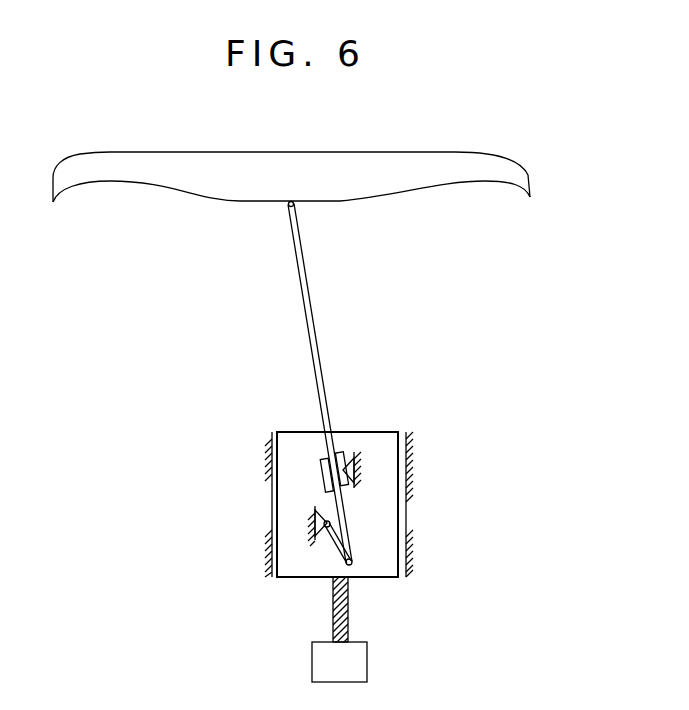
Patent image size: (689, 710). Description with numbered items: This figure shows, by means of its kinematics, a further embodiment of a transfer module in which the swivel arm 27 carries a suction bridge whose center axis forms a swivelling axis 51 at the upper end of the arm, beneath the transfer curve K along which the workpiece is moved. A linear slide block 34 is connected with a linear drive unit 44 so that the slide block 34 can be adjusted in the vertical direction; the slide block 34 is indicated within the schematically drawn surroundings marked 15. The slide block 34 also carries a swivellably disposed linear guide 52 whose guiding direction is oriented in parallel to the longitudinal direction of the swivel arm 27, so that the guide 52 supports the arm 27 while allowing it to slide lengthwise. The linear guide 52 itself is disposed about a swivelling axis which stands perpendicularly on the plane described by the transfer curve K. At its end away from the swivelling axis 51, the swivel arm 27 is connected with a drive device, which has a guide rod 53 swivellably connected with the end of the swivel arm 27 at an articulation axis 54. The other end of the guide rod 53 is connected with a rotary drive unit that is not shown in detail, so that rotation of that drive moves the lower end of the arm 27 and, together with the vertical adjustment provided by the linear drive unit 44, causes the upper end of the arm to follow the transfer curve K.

The transfer curve K is at (528, 172).
The swivel arm 27 is at (313, 307).
The swivelling axis 51 is at (288, 212).
The detection device 15 is at (230, 460).
The linear slide block 34 is at (386, 498).
The linear guide 52 is at (353, 442).
The guide rod 53 is at (333, 537).
The articulation axis 54 is at (352, 560).
The linear drive unit 44 is at (385, 631).